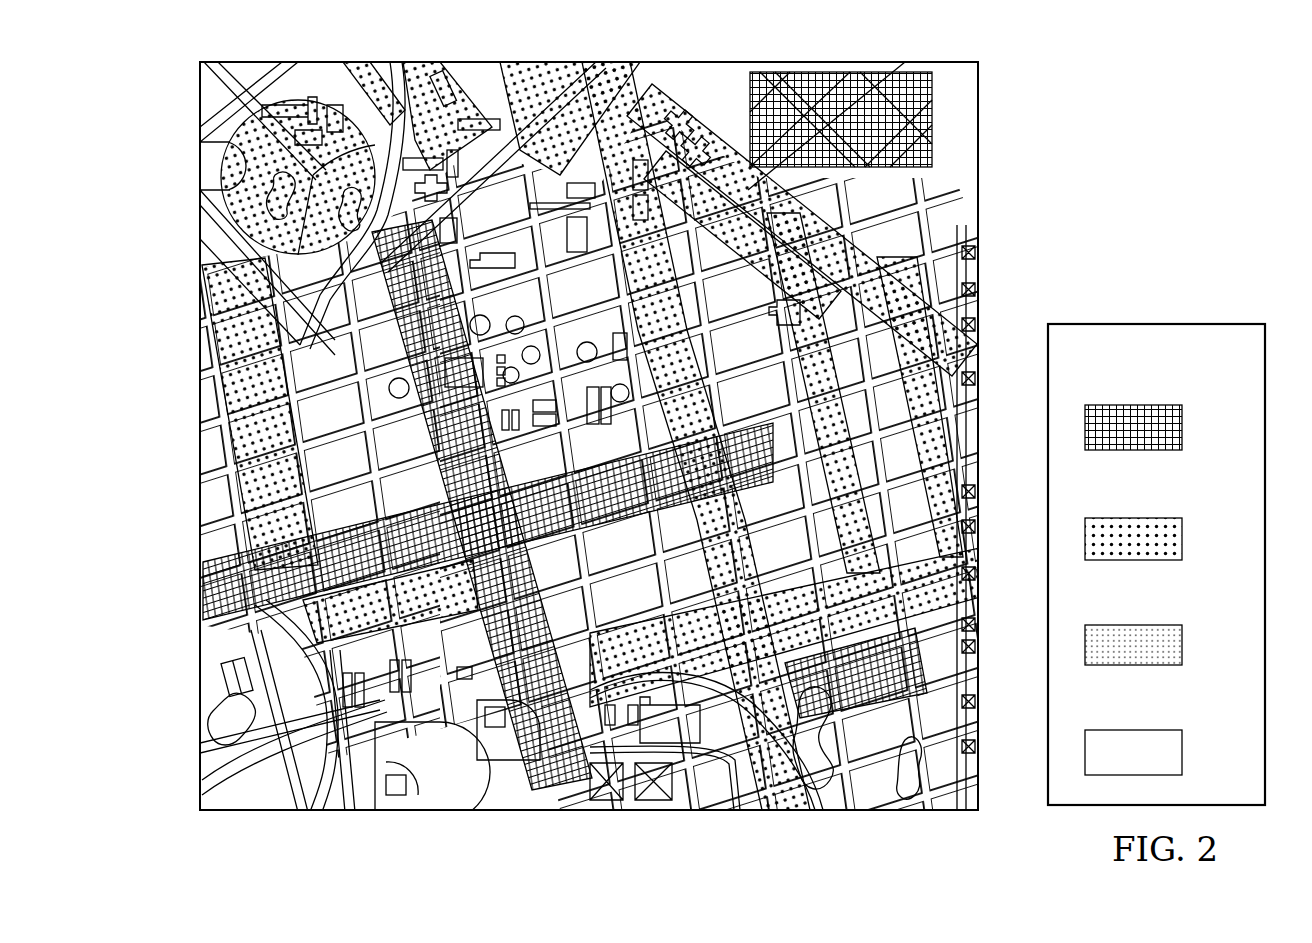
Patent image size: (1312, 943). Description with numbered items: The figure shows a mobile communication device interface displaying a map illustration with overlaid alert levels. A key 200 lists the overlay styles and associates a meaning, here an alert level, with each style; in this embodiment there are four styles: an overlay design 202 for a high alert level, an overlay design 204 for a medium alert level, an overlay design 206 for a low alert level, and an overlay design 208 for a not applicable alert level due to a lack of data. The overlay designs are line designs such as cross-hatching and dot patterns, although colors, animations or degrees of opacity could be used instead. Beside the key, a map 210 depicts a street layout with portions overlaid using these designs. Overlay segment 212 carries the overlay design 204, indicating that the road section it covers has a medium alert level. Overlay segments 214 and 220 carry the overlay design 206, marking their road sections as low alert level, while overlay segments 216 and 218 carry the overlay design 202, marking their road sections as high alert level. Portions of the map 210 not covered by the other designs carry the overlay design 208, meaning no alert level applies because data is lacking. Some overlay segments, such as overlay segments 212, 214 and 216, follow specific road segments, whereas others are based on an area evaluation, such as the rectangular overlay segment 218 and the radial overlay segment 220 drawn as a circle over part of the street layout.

The key 200 is at (1170, 318).
The overlay design 202 is at (1183, 430).
The overlay design 204 is at (1183, 538).
The overlay design 206 is at (1183, 645).
The overlay design 208 is at (1183, 752).
The map 210 is at (496, 57).
The overlay segment 212 is at (827, 796).
The overlay segment 214 is at (684, 109).
The overlay segment 216 is at (556, 793).
The rectangular overlay segment 218 is at (940, 95).
The radial overlay segment 220 is at (217, 163).